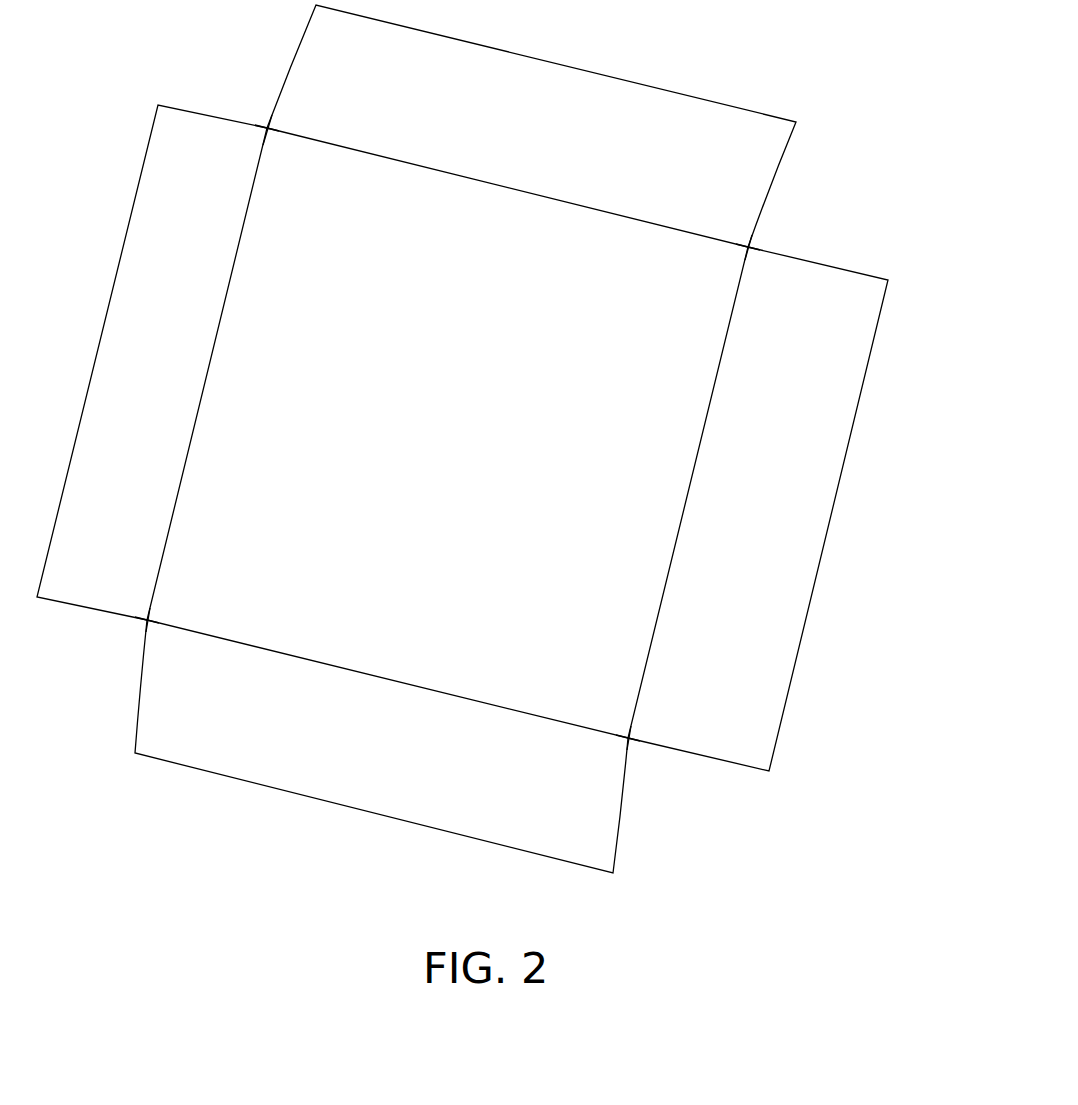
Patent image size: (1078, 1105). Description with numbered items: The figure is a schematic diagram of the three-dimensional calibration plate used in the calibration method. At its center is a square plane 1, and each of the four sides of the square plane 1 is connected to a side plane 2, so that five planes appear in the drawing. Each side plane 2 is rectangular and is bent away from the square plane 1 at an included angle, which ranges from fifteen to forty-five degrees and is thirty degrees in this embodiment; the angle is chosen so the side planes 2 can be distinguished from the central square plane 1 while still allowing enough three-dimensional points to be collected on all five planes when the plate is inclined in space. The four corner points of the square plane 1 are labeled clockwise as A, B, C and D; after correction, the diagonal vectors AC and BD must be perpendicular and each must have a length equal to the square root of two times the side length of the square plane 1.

The square plane 1 is at (567, 518).
The side plane 2 is at (558, 135).
The corner point A is at (261, 115).
The corner point B is at (758, 240).
The corner point C is at (637, 750).
The corner point D is at (132, 628).